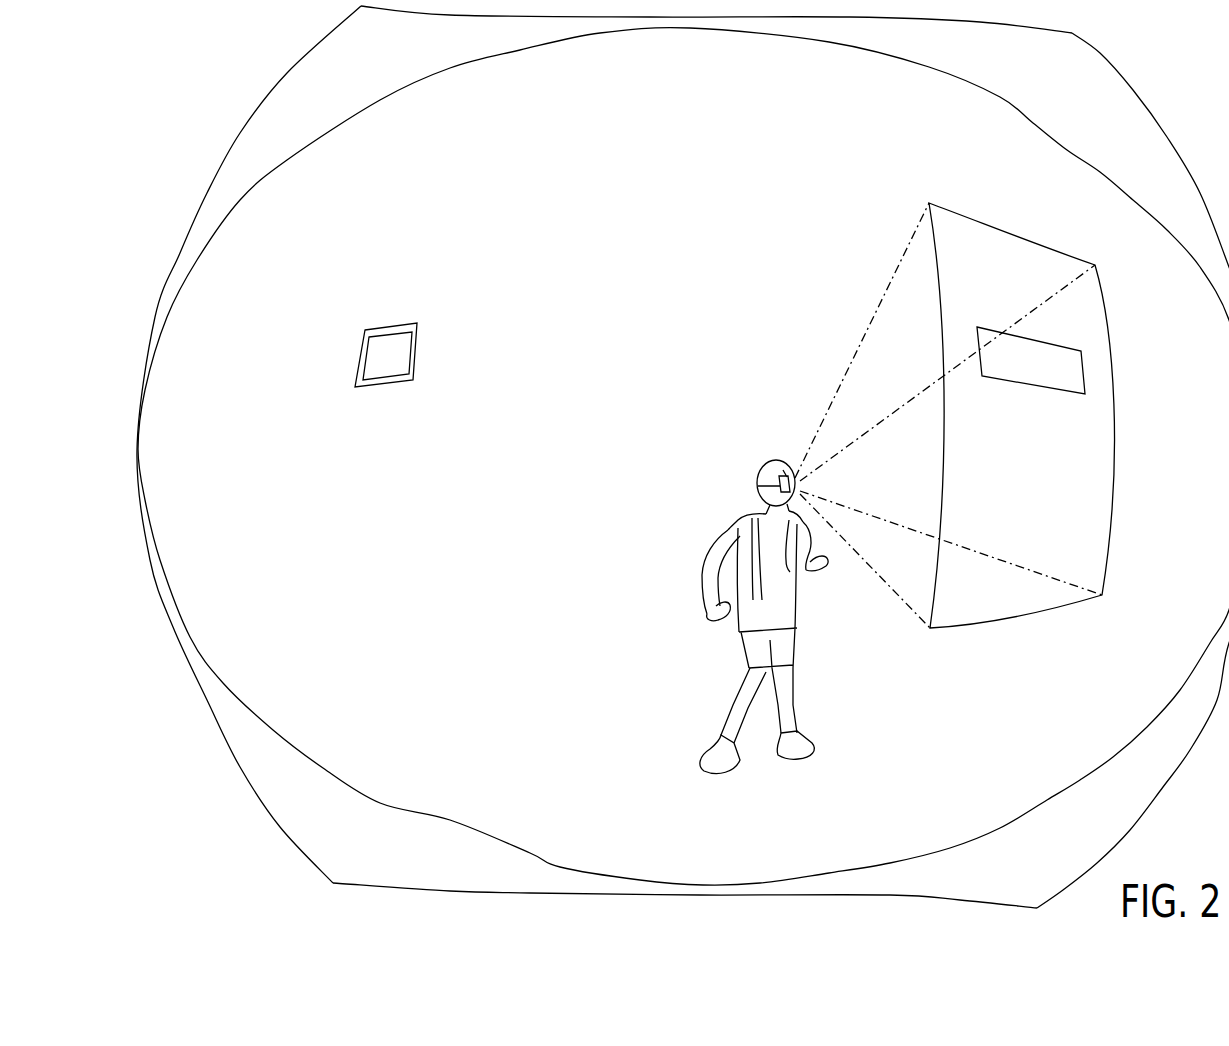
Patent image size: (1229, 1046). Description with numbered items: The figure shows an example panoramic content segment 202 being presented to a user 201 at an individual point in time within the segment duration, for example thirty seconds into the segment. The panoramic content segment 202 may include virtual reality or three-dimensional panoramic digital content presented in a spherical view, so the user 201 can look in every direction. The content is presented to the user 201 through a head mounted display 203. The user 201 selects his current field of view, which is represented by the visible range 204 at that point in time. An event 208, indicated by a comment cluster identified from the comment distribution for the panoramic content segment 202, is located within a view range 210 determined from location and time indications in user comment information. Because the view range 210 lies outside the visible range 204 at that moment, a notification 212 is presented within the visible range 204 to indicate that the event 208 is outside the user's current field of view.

The user 201 is at (751, 621).
The panoramic content segment 202 is at (644, 182).
The head mounted display 203 is at (792, 483).
The visible range 204 is at (1033, 297).
The event 208 is at (400, 365).
The view range 210 is at (388, 326).
The notification 212 is at (1045, 373).